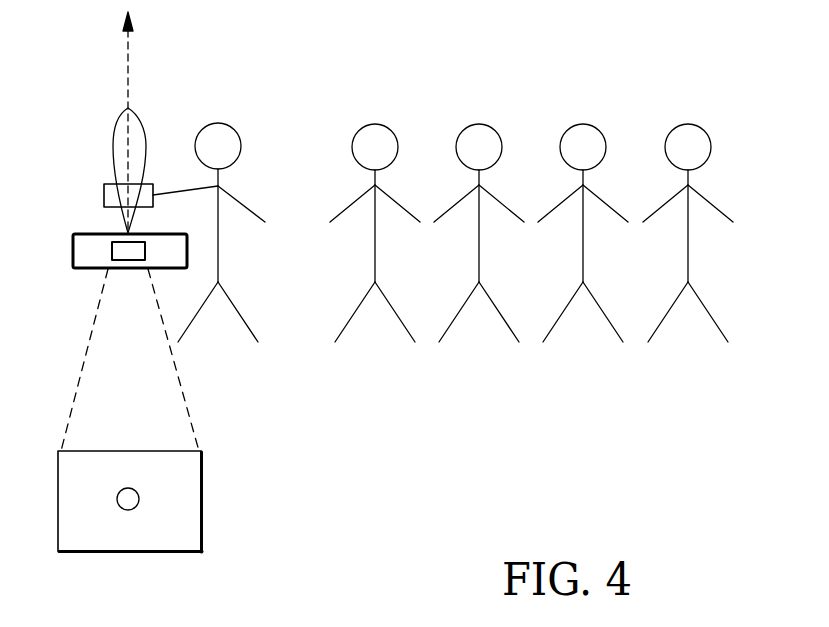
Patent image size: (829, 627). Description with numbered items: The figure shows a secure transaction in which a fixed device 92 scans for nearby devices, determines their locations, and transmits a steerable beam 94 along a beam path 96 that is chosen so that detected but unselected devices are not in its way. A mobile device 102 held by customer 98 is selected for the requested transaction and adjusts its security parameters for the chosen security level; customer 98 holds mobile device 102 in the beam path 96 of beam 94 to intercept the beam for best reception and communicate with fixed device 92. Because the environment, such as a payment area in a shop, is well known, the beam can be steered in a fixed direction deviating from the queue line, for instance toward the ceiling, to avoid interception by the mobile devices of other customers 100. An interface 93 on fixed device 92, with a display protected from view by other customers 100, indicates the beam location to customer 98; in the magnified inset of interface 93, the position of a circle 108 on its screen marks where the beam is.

The fixed device 92 is at (73, 252).
The interface 93 is at (112, 252).
The beam 94 is at (112, 139).
The beam path 96 is at (127, 62).
The customer 98 is at (232, 106).
The other customers 100 is at (715, 112).
The mobile device 102 is at (104, 195).
The circle 108 is at (128, 487).